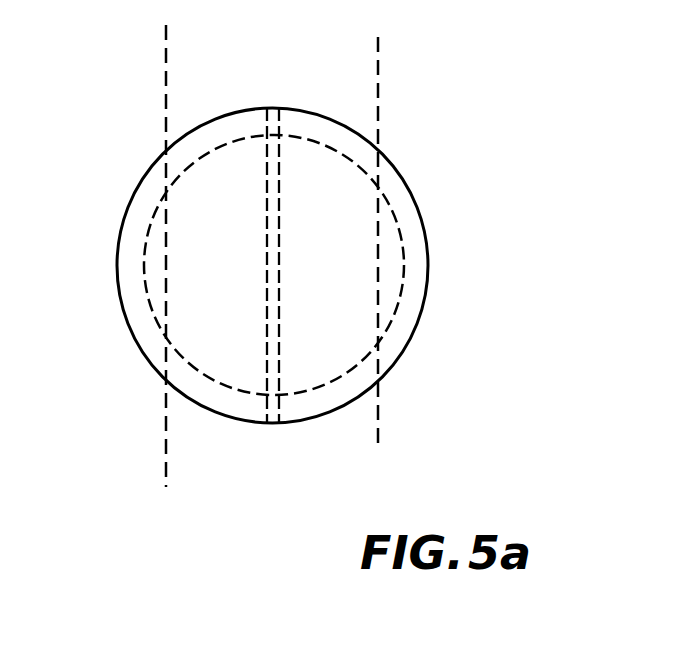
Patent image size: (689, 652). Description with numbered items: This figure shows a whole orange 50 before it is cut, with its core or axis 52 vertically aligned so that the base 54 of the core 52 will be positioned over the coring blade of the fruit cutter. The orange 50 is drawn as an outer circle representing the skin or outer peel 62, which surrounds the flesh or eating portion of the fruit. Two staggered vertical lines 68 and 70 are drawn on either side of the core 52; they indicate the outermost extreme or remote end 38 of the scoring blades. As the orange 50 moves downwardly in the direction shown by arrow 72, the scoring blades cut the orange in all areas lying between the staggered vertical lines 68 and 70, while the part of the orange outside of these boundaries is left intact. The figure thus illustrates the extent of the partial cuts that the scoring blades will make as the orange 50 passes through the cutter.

The remote end 38 is at (160, 318).
The orange 50 is at (110, 194).
The core 52 is at (275, 380).
The base of the core 54 is at (282, 382).
The outer peel 62 is at (420, 232).
The staggered vertical line 68 is at (166, 65).
The staggered vertical line 70 is at (378, 65).
The arrow 72 is at (327, 257).